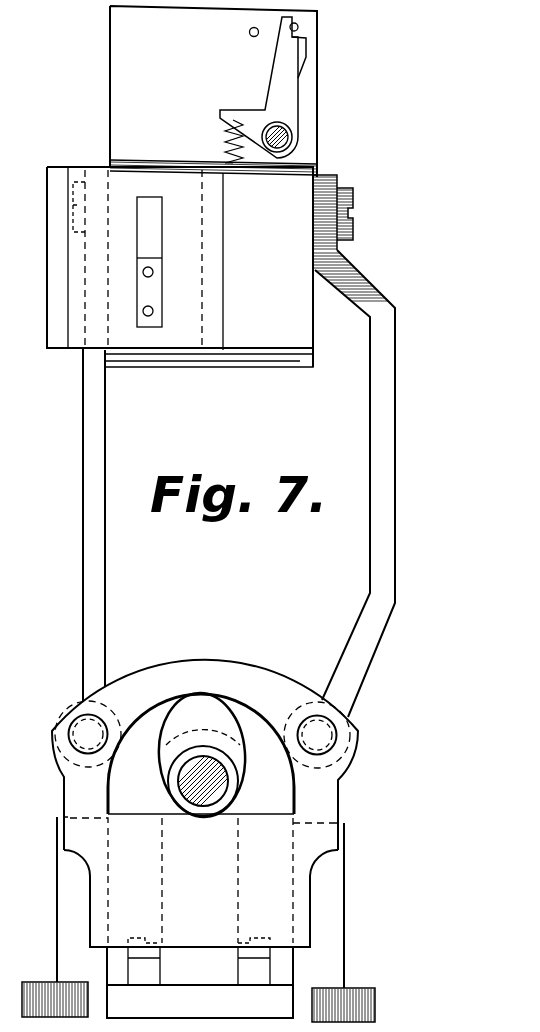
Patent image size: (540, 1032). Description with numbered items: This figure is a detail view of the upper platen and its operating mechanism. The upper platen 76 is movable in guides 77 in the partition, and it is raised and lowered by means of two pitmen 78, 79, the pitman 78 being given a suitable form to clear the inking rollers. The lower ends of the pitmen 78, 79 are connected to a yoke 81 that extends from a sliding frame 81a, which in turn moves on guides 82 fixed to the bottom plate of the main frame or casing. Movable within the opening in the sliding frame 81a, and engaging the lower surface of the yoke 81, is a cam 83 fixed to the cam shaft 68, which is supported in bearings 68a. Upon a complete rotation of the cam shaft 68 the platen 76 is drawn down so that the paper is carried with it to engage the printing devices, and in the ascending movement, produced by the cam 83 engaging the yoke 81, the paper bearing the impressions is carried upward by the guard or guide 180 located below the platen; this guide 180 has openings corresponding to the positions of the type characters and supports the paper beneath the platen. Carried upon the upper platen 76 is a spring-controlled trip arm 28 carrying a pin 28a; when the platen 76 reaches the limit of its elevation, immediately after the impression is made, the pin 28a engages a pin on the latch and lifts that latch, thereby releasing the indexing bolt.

The trip arm 28 is at (272, 90).
The pin 28a is at (302, 50).
The upper platen 76 is at (123, 92).
The guides 77 is at (215, 290).
The pitman 78 is at (380, 421).
The pitman 79 is at (107, 438).
The guard 180 is at (221, 367).
The yoke 81 is at (202, 667).
The sliding frame 81a is at (201, 882).
The guides 82 is at (63, 895).
The cam 83 is at (202, 718).
The cam shaft 68 is at (210, 782).
The bearings 68a is at (172, 797).